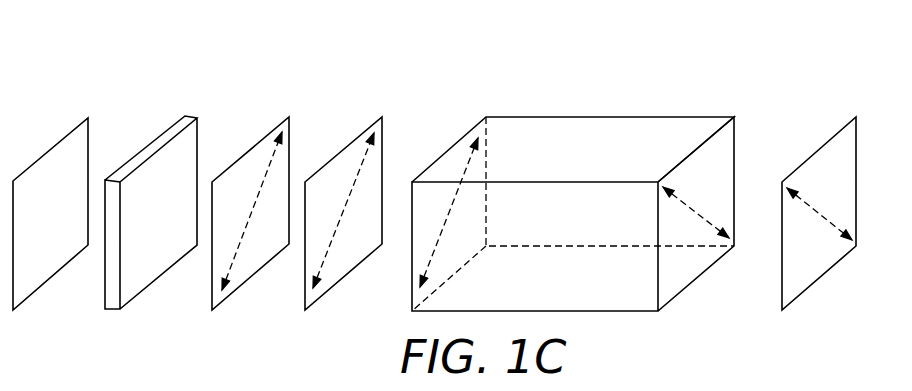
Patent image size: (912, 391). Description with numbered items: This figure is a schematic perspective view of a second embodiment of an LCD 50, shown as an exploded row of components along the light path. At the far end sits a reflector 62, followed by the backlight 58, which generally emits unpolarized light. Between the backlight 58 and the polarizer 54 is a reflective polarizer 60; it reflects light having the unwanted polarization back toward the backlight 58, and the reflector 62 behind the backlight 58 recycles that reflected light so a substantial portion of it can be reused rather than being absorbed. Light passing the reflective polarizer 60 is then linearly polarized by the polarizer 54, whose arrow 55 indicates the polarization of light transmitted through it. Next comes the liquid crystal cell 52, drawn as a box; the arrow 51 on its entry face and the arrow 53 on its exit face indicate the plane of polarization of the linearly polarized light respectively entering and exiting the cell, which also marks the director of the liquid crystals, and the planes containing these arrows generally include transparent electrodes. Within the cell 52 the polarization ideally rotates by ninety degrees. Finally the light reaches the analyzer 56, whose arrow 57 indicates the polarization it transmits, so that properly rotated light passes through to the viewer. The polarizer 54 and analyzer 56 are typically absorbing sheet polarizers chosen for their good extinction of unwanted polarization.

The LCD 50 is at (532, 92).
The arrow 51 is at (466, 165).
The liquid crystal cell 52 is at (677, 116).
The arrow 53 is at (690, 207).
The polarizer 54 is at (352, 142).
The arrow 55 is at (345, 207).
The analyzer 56 is at (832, 138).
The arrow 57 is at (813, 208).
The backlight 58 is at (157, 138).
The reflective polarizer 60 is at (265, 137).
The reflector 62 is at (45, 153).